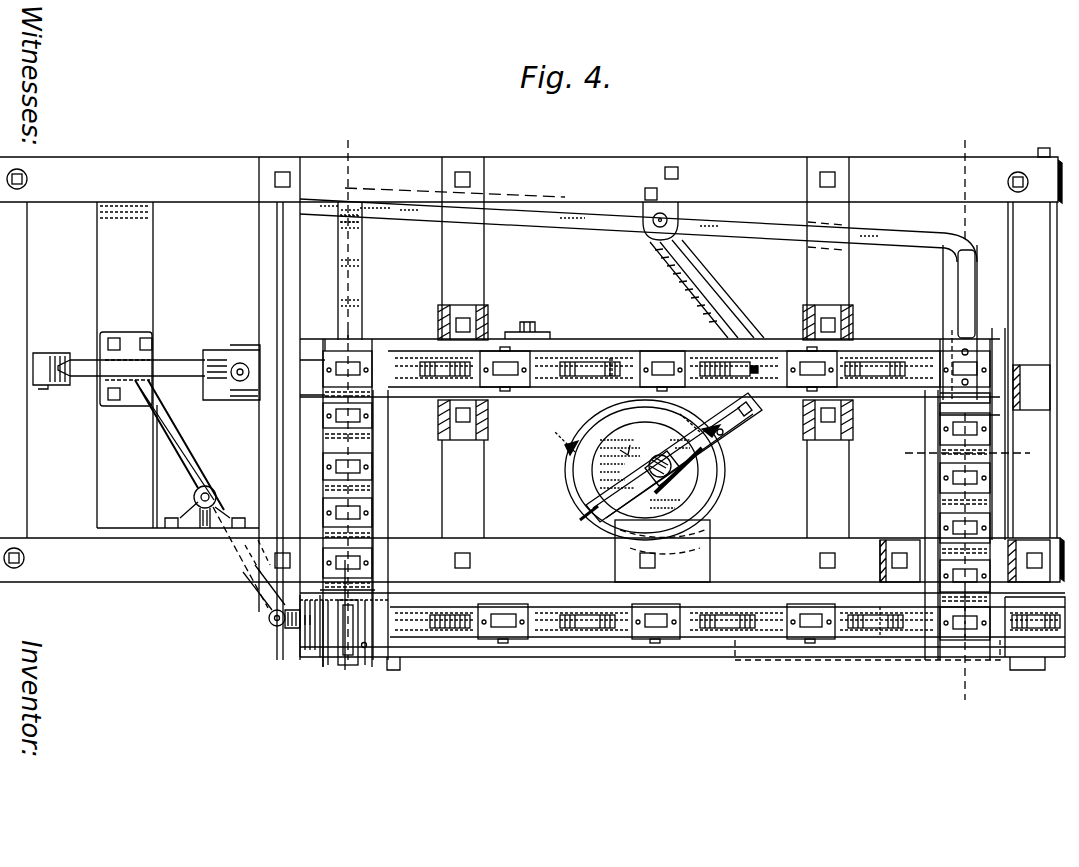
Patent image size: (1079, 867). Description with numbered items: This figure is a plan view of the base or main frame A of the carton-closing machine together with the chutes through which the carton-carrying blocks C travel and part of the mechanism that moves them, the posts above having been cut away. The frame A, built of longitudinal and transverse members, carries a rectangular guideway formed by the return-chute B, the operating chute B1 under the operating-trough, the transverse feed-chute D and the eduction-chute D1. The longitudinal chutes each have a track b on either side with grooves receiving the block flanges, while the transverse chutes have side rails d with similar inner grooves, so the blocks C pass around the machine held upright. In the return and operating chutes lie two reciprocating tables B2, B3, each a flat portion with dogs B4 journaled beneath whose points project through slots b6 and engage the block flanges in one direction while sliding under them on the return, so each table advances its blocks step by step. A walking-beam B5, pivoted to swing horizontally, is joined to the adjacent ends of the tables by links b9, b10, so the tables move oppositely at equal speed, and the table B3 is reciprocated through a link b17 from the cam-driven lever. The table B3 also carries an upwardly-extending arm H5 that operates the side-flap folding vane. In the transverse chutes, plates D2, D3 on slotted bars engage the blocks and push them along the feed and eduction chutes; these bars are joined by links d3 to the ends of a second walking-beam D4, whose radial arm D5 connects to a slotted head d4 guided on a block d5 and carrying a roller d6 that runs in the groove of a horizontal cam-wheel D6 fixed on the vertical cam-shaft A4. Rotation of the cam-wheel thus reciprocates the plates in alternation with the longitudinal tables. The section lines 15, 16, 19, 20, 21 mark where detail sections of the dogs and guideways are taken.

The base or main frame A is at (531, 175).
The vertical cam-shaft A4 is at (705, 518).
The return-chute B is at (735, 645).
The chute under the operating-trough B1 is at (570, 352).
The reciprocating table B2 is at (580, 640).
The reciprocating table B3 is at (218, 350).
The dogs B4 is at (608, 340).
The walking-beam B5 is at (180, 456).
The track b is at (560, 593).
The slots b6 is at (880, 642).
The link b9 is at (292, 628).
The link b10 is at (170, 385).
The link b17 is at (82, 350).
The carton-carrying blocks C is at (505, 352).
The feed-chute D is at (372, 437).
The eduction-chute D1 is at (940, 430).
The transverse plate D2 is at (270, 598).
The transverse plate D3 is at (948, 393).
The walking-beam D4 is at (735, 222).
The radially-extending arm D5 is at (688, 307).
The horizontal cam-wheel D6 is at (568, 468).
The side rails d is at (395, 552).
The links d3 is at (975, 270).
The slotted head d4 is at (700, 455).
The block d5 is at (690, 470).
The roller d6 is at (730, 436).
The upwardly-extending arm H5 is at (532, 332).
The section line 15 is at (796, 650).
The section line 16 is at (34, 368).
The section line 19 is at (341, 678).
The section line 20 is at (956, 686).
The section line 21 is at (966, 455).